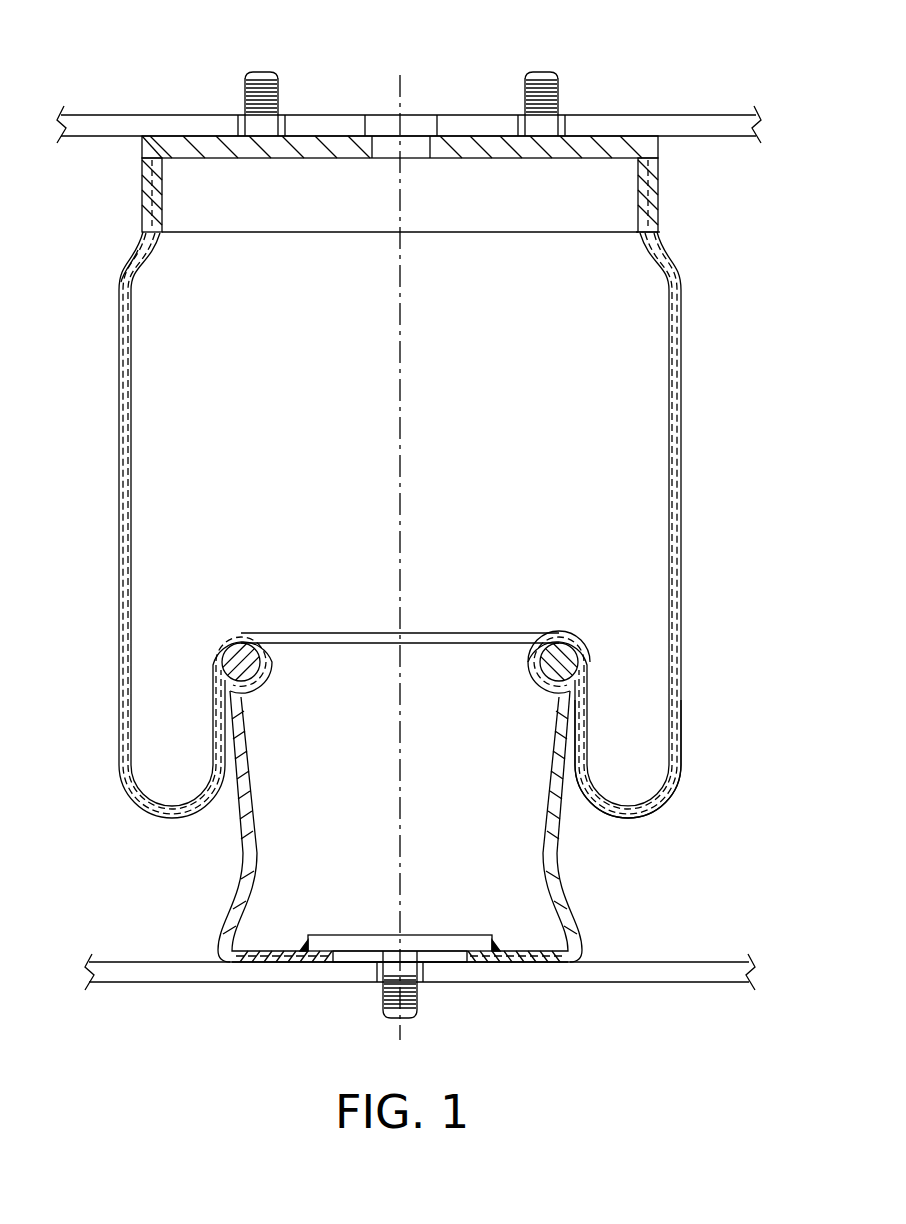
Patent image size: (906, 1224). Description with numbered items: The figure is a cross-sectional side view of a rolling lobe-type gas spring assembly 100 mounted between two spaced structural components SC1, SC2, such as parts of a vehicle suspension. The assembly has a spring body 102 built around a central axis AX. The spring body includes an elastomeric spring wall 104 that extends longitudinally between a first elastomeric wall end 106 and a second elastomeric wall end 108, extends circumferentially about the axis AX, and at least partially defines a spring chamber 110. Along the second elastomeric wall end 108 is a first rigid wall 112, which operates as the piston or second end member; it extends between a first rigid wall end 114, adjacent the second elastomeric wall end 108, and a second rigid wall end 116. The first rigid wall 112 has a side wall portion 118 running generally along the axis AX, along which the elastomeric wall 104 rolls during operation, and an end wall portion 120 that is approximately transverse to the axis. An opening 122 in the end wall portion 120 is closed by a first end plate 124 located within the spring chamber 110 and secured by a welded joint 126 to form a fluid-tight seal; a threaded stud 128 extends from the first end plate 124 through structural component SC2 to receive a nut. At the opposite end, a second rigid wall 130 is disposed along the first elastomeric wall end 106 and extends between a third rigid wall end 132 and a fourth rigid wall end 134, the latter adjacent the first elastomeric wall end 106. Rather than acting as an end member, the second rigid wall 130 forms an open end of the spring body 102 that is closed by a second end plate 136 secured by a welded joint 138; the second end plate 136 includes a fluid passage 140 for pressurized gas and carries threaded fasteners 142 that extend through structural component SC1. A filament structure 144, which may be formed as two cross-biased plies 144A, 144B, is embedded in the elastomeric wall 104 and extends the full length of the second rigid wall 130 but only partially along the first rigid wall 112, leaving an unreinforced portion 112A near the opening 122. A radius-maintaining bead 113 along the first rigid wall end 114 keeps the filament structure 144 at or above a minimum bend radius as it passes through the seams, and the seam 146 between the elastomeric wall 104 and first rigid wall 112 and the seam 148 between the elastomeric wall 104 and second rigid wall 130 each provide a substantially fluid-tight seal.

The gas spring assembly 100 is at (717, 331).
The spring body 102 is at (91, 578).
The elastomeric spring wall 104 is at (105, 428).
The first elastomeric wall end 106 is at (156, 273).
The second elastomeric wall end 108 is at (581, 611).
The spring chamber 110 is at (652, 357).
The first rigid wall 112 is at (226, 867).
The unreinforced portion 112A is at (322, 950).
The radius-maintaining bead 113 is at (225, 642).
The first rigid wall end 114 is at (535, 672).
The second rigid wall end 116 is at (596, 939).
The side wall portion 118 is at (558, 845).
The end wall portion 120 is at (262, 952).
The opening 122 is at (451, 970).
The first end plate 124 is at (350, 945).
The welded joint 126 is at (488, 950).
The threaded stud 128 is at (383, 1003).
The second rigid wall 130 is at (128, 200).
The third rigid wall end 132 is at (674, 172).
The fourth rigid wall end 134 is at (674, 222).
The second end plate 136 is at (205, 145).
The welded joint 138 is at (130, 167).
The fluid passage 140 is at (412, 135).
The threaded fasteners 142 is at (262, 72).
The filament structure 144 is at (693, 622).
The first cross-biased ply 144A is at (670, 505).
The second cross-biased ply 144B is at (678, 470).
The seam 146 is at (348, 640).
The seam 148 is at (345, 234).
The central axis AX is at (404, 392).
The first structural component SC1 is at (655, 125).
The second structural component SC2 is at (668, 975).